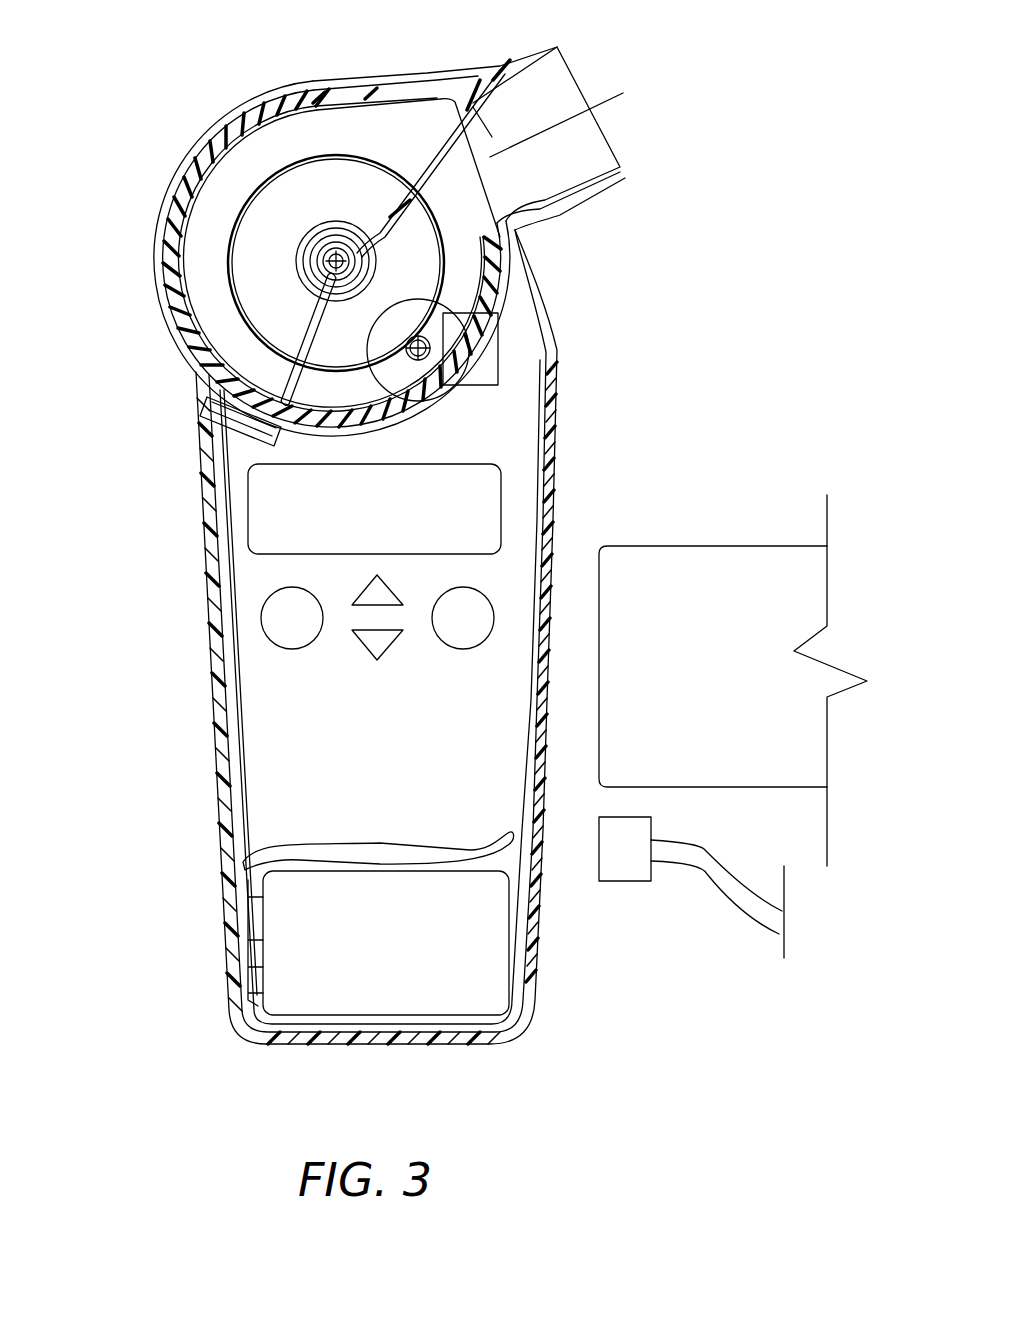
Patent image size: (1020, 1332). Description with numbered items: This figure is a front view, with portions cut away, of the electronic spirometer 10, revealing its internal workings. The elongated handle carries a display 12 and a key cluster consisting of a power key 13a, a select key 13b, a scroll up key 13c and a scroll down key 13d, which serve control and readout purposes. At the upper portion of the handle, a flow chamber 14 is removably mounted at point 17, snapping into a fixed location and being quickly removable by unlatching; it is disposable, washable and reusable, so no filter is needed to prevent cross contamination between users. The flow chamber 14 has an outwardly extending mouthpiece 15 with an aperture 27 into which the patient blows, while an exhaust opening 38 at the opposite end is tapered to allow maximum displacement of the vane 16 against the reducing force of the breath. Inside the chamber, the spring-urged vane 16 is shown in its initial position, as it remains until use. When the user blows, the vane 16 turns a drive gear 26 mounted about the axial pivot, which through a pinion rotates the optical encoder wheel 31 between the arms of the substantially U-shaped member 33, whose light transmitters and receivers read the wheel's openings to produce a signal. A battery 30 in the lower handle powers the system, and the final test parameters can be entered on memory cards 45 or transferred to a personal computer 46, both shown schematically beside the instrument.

The electronic spirometer 10 is at (580, 357).
The display 12 is at (462, 512).
The power key 13a is at (285, 633).
The select key 13b is at (380, 647).
The scroll up key 13c is at (380, 596).
The scroll down key 13d is at (473, 622).
The flow chamber 14 is at (292, 122).
The mouthpiece 15 is at (545, 46).
The vane 16 is at (258, 360).
The mounting point 17 is at (185, 192).
The drive gear 26 is at (185, 283).
The mouthpiece aperture 27 is at (568, 78).
The battery 30 is at (462, 947).
The optical encoder wheel 31 is at (465, 280).
The U-shaped member 33 is at (510, 407).
The exhaust opening 38 is at (372, 86).
The memory cards 45 is at (733, 680).
The personal computer 46 is at (760, 919).